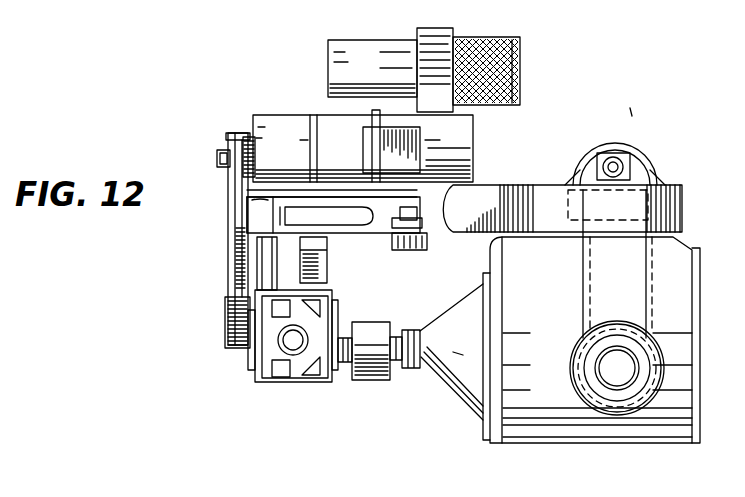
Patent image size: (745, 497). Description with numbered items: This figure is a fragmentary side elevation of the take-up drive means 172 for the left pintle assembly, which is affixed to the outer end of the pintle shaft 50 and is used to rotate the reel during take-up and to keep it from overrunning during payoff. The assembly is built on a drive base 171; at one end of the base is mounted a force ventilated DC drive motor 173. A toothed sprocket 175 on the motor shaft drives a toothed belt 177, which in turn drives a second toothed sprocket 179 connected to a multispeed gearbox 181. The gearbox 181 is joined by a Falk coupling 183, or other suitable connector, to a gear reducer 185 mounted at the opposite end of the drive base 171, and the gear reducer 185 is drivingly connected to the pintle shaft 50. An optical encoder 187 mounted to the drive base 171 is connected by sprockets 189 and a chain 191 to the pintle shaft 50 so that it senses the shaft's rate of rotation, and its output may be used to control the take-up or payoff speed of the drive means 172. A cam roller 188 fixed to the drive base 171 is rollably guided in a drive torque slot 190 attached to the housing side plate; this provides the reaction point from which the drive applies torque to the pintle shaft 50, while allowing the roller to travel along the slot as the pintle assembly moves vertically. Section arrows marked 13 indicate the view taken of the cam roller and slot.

The section line 13 is at (343, 152).
The pintle shaft 50 is at (615, 368).
The drive base 171 is at (512, 186).
The take-up drive means 172 is at (582, 78).
The drive motor 173 is at (318, 113).
The toothed sprocket 175 is at (228, 147).
The toothed belt 177 is at (228, 204).
The toothed sprocket 179 is at (228, 310).
The multispeed gearbox 181 is at (302, 384).
The Falk coupling 183 is at (372, 334).
The gear reducer 185 is at (525, 418).
The optical encoder 187 is at (634, 158).
The cam roller 188 is at (275, 195).
The sprockets 189 is at (615, 141).
The drive torque slot 190 is at (338, 228).
The chain 191 is at (583, 268).